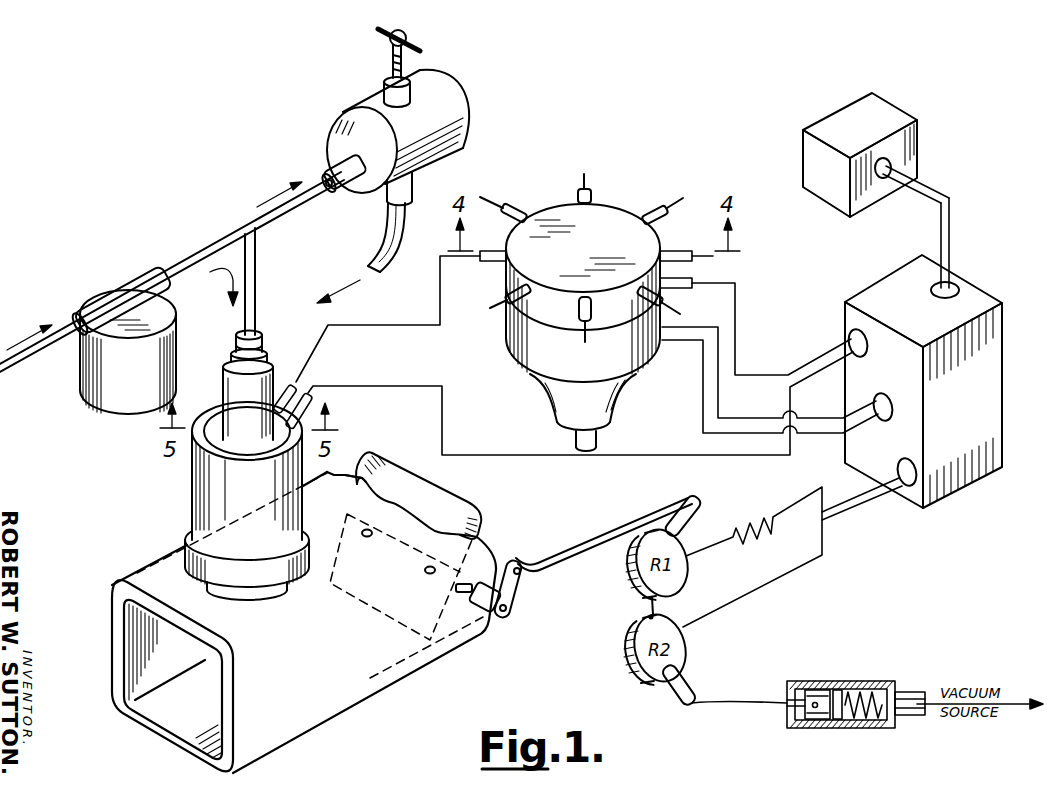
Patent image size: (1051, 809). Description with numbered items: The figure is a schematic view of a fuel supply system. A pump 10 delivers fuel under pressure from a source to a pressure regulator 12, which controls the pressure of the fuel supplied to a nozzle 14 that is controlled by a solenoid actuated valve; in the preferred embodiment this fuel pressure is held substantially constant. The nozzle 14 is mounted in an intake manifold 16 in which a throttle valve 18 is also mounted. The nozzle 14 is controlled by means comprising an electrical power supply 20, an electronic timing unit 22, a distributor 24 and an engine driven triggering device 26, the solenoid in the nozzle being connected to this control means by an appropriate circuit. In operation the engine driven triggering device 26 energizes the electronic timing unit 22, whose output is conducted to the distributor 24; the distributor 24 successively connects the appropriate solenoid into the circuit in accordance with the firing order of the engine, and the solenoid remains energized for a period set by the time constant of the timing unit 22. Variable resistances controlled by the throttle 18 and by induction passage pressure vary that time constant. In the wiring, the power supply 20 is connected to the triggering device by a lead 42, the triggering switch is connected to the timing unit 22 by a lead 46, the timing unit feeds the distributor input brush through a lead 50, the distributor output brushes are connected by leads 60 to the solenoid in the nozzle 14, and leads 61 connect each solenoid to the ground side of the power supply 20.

The pump 10 is at (110, 283).
The pressure regulator 12 is at (443, 97).
The nozzle 14 is at (212, 502).
The intake manifold 16 is at (328, 686).
The throttle valve 18 is at (457, 494).
The electrical power supply 20 is at (857, 113).
The electronic timing unit 22 is at (882, 290).
The distributor 24 is at (600, 208).
The engine driven triggering device 26 is at (545, 362).
The lead 42 is at (950, 238).
The lead 46 is at (810, 417).
The lead 50 is at (808, 355).
The leads 60 is at (585, 173).
The leads 61 is at (378, 385).